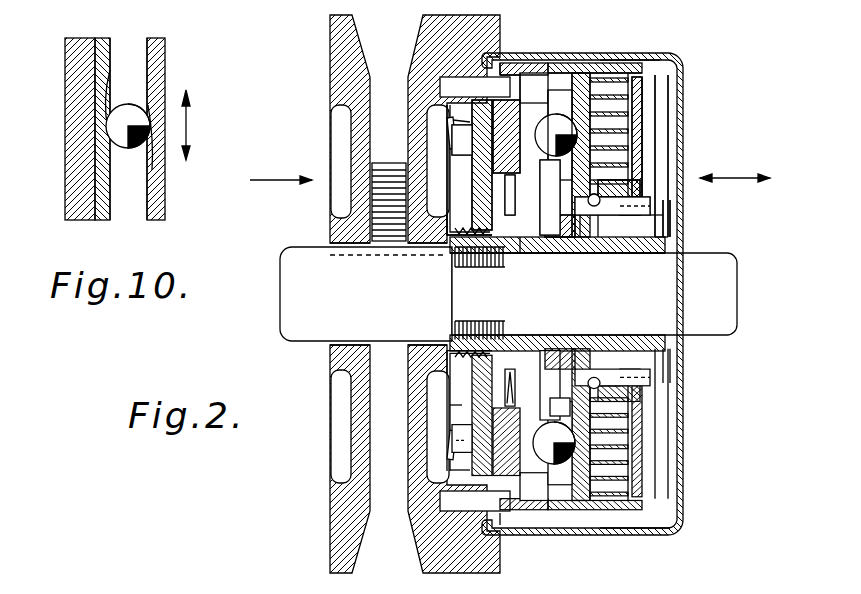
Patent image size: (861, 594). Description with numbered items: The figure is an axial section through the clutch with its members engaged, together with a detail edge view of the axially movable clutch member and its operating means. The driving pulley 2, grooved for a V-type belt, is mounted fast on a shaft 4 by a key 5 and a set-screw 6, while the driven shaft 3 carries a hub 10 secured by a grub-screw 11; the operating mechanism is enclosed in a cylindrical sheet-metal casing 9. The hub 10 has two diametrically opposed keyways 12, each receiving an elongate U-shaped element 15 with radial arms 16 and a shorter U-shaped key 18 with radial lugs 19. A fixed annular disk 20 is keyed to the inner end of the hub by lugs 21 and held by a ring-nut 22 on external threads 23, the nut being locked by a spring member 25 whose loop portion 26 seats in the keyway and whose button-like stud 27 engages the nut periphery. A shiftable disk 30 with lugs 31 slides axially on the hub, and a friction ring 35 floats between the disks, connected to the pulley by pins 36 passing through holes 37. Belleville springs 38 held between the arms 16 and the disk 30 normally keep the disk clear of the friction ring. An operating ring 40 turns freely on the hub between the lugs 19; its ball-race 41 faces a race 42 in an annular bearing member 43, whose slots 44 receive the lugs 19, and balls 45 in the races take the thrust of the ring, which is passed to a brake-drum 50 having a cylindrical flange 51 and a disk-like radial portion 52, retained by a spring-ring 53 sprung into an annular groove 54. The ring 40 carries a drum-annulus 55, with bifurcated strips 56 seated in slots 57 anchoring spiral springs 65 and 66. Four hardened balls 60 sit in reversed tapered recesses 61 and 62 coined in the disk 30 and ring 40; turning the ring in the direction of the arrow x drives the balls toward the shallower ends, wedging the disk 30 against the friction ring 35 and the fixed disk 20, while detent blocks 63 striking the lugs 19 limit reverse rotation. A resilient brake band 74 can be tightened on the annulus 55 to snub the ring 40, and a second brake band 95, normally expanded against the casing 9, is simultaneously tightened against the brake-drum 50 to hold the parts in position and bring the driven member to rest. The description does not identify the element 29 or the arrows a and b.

In FIG. 2, the driving pulley 2 is at (330, 91).
In FIG. 2, the driven shaft 3 is at (594, 294).
In FIG. 2, the shaft 4 is at (590, 575).
In FIG. 2, the key 5 is at (332, 244).
In FIG. 2, the set-screw 6 is at (380, 165).
In FIG. 2, the housing or casing 9 is at (684, 528).
In FIG. 2, the hub 10 is at (672, 250).
In FIG. 2, the grub-screw 11 is at (472, 267).
In FIG. 2, the slot or keyway 12 is at (672, 234).
In FIG. 2, the U-shaped element 15 is at (580, 253).
In FIG. 2, the arms 16 is at (650, 200).
In FIG. 2, the U-shaped key 18 is at (575, 222).
In FIG. 2, the lugs 19 is at (650, 208).
In FIG. 2, the annular disk 20 is at (472, 468).
In FIG. 2, the radial lugs or integral keys 21 is at (490, 267).
In FIG. 2, the ring-nut 22 is at (445, 405).
In FIG. 2, the external threads 23 is at (480, 321).
In FIG. 2, the spring member 25 is at (452, 210).
In FIG. 2, the loop portion 26 is at (445, 255).
In FIG. 2, the button-like stud 27 is at (452, 146).
In FIG. 2, the hub member 29 is at (472, 175).
In FIG. 10, the shiftable clutch disk 30 is at (111, 50).
In FIG. 2, the shiftable clutch disk 30 is at (560, 486).
In FIG. 2, the integral lugs or keys 31 is at (525, 253).
In FIG. 10, the friction ring 35 is at (68, 78).
In FIG. 2, the friction ring 35 is at (512, 526).
In FIG. 2, the pins 36 is at (475, 294).
In FIG. 2, the holes 37 is at (512, 66).
In FIG. 2, the Belleville springs 38 is at (506, 291).
In FIG. 10, the operating ring 40 is at (166, 66).
In FIG. 2, the operating ring 40 is at (603, 78).
In FIG. 2, the ball-race 41 is at (550, 197).
In FIG. 2, the race 42 is at (598, 253).
In FIG. 2, the annular bearing member 43 is at (610, 253).
In FIG. 2, the slots 44 is at (640, 190).
In FIG. 2, the balls 45 is at (560, 253).
In FIG. 2, the brake-drum 50 is at (668, 85).
In FIG. 2, the cylindrical flange 51 is at (684, 66).
In FIG. 2, the disk-like radial portion 52 is at (642, 100).
In FIG. 2, the spring-ring or split washer 53 is at (650, 372).
In FIG. 2, the annular groove 54 is at (665, 222).
In FIG. 2, the peripheral flange or drum-annulus 55 is at (548, 78).
In FIG. 2, the bifurcated strips 56 is at (620, 65).
In FIG. 2, the slots 57 is at (580, 75).
In FIG. 10, the balls 60 is at (128, 126).
In FIG. 2, the balls 60 is at (555, 289).
In FIG. 10, the recess or depression 61 is at (104, 90).
In FIG. 2, the recess or depression 61 is at (535, 130).
In FIG. 10, the recess or depression 62 is at (152, 160).
In FIG. 2, the recess or depression 62 is at (558, 135).
In FIG. 2, the detent blocks 63 is at (560, 407).
In FIG. 2, the spiral spring 65 is at (642, 114).
In FIG. 2, the spiral spring 66 is at (642, 130).
In FIG. 2, the brake band 74 is at (548, 65).
In FIG. 2, the brake band 95 is at (648, 52).
In FIG. 2, the direction arrow a is at (735, 170).
In FIG. 2, the direction arrow b is at (281, 174).
In FIG. 10, the arrow x is at (194, 125).